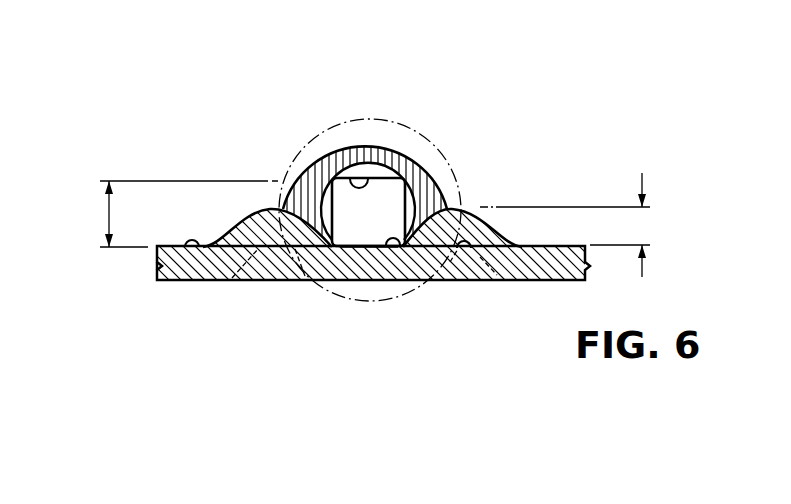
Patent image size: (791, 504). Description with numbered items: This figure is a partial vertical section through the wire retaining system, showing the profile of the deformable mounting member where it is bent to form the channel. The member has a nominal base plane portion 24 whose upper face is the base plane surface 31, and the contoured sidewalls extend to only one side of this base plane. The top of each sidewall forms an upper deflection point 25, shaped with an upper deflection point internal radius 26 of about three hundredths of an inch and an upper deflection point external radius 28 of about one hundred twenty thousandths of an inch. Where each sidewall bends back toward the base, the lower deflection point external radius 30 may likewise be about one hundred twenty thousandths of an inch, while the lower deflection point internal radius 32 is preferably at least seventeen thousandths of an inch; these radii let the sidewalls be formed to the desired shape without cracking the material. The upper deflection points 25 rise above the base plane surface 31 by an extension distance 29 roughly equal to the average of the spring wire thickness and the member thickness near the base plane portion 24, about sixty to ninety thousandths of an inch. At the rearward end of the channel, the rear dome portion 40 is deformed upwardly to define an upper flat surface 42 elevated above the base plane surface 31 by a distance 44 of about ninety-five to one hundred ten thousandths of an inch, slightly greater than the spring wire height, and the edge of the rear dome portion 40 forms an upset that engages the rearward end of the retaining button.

The base plane portion 24 is at (545, 245).
The upper deflection point 25 is at (276, 208).
The upper deflection point internal radius 26 is at (490, 228).
The upper deflection point external radius 28 is at (458, 206).
The extension distance 29 is at (643, 219).
The lower deflection point external radius 30 is at (430, 280).
The base plane surface 31 is at (173, 280).
The lower deflection point internal radius 32 is at (382, 247).
The rear dome portion 40 is at (327, 143).
The upper flat surface 42 is at (378, 168).
The elevation distance 44 is at (107, 217).